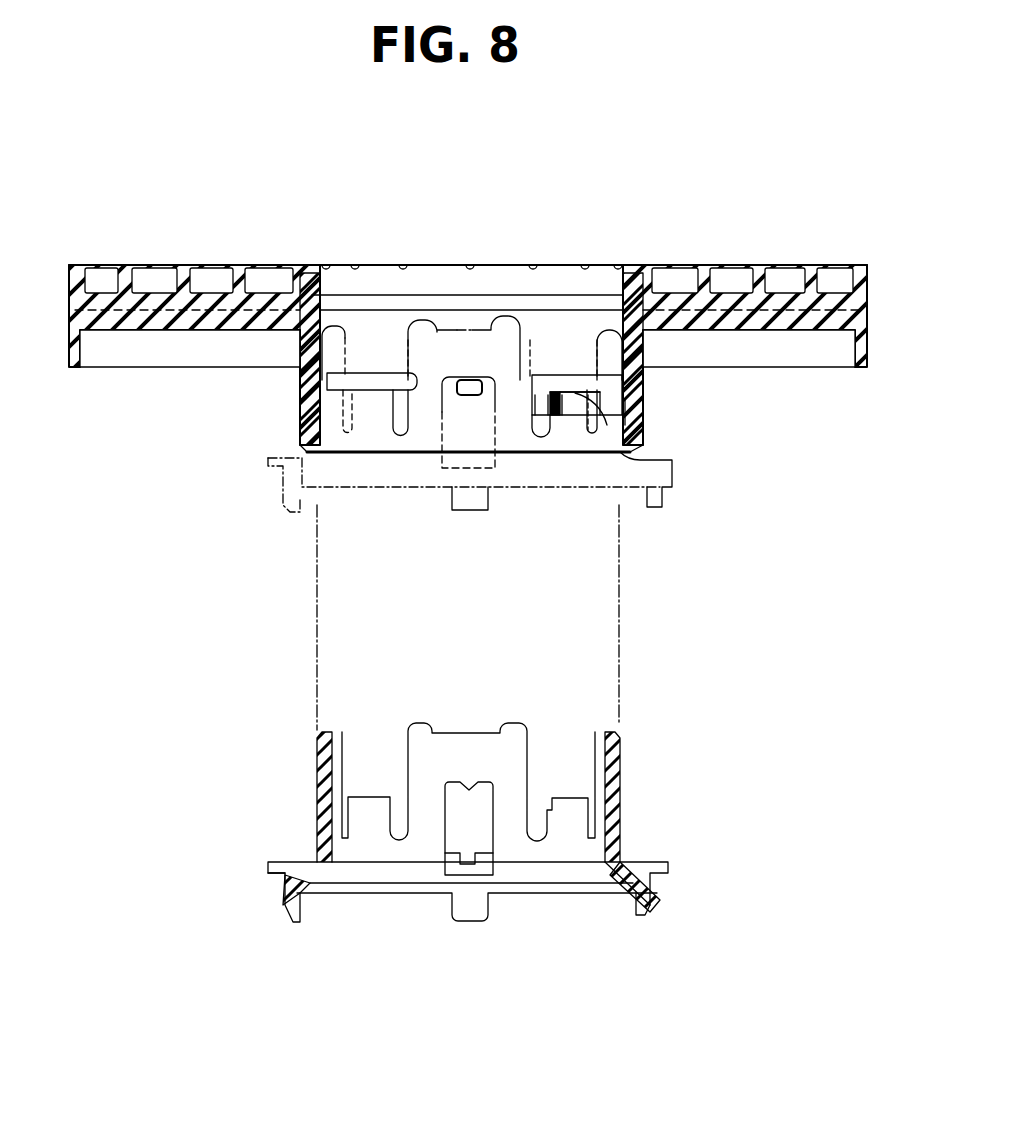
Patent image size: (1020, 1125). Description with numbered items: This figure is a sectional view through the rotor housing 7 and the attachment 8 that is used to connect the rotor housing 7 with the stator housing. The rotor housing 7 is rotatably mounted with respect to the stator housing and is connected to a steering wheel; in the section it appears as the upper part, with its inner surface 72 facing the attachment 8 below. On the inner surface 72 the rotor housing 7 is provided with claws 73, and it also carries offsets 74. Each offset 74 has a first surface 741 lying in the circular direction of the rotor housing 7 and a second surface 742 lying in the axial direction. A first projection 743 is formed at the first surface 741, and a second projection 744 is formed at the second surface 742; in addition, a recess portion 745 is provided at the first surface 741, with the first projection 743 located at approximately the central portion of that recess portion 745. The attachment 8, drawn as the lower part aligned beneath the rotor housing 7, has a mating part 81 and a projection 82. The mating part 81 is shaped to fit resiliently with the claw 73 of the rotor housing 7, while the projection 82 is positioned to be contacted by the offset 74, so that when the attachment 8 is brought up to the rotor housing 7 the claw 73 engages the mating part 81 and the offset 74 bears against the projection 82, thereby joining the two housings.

The rotor housing 7 is at (734, 262).
The inner surface 72 is at (320, 322).
The claw 73 is at (462, 375).
The offset 74 is at (544, 382).
The first surface 741 is at (590, 393).
The second surface 742 is at (549, 402).
The first projection 743 is at (637, 423).
The second projection 744 is at (539, 397).
The recess portion 745 is at (563, 397).
The attachment 8 is at (627, 790).
The mating part 81 is at (460, 785).
The projection 82 is at (566, 815).